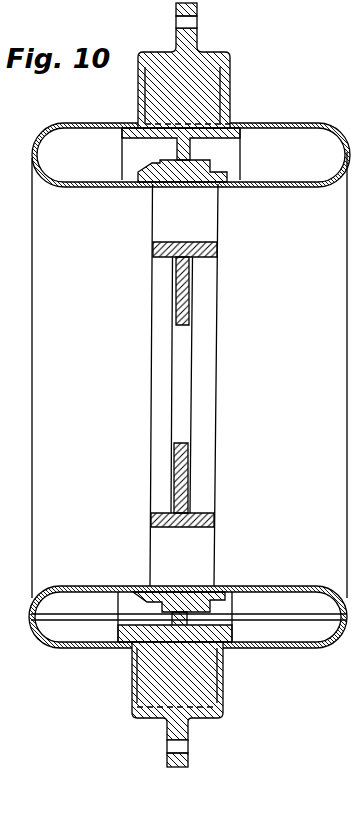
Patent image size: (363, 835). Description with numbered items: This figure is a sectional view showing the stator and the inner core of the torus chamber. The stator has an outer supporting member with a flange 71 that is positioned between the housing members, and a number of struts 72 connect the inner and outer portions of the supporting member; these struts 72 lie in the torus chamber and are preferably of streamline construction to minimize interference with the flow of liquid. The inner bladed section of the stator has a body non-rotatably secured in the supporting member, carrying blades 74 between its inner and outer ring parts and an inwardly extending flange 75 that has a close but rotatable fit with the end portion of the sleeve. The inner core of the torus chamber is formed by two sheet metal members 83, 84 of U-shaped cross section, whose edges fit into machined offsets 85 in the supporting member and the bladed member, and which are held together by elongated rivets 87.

The flange 71 is at (190, 38).
The struts 72 is at (208, 90).
The blades 74 is at (210, 212).
The inwardly extending flange 75 is at (190, 292).
The sheet metal member 83 is at (80, 123).
The sheet metal member 84 is at (316, 111).
The machined offsets 85 is at (142, 178).
The elongated rivets 87 is at (267, 624).